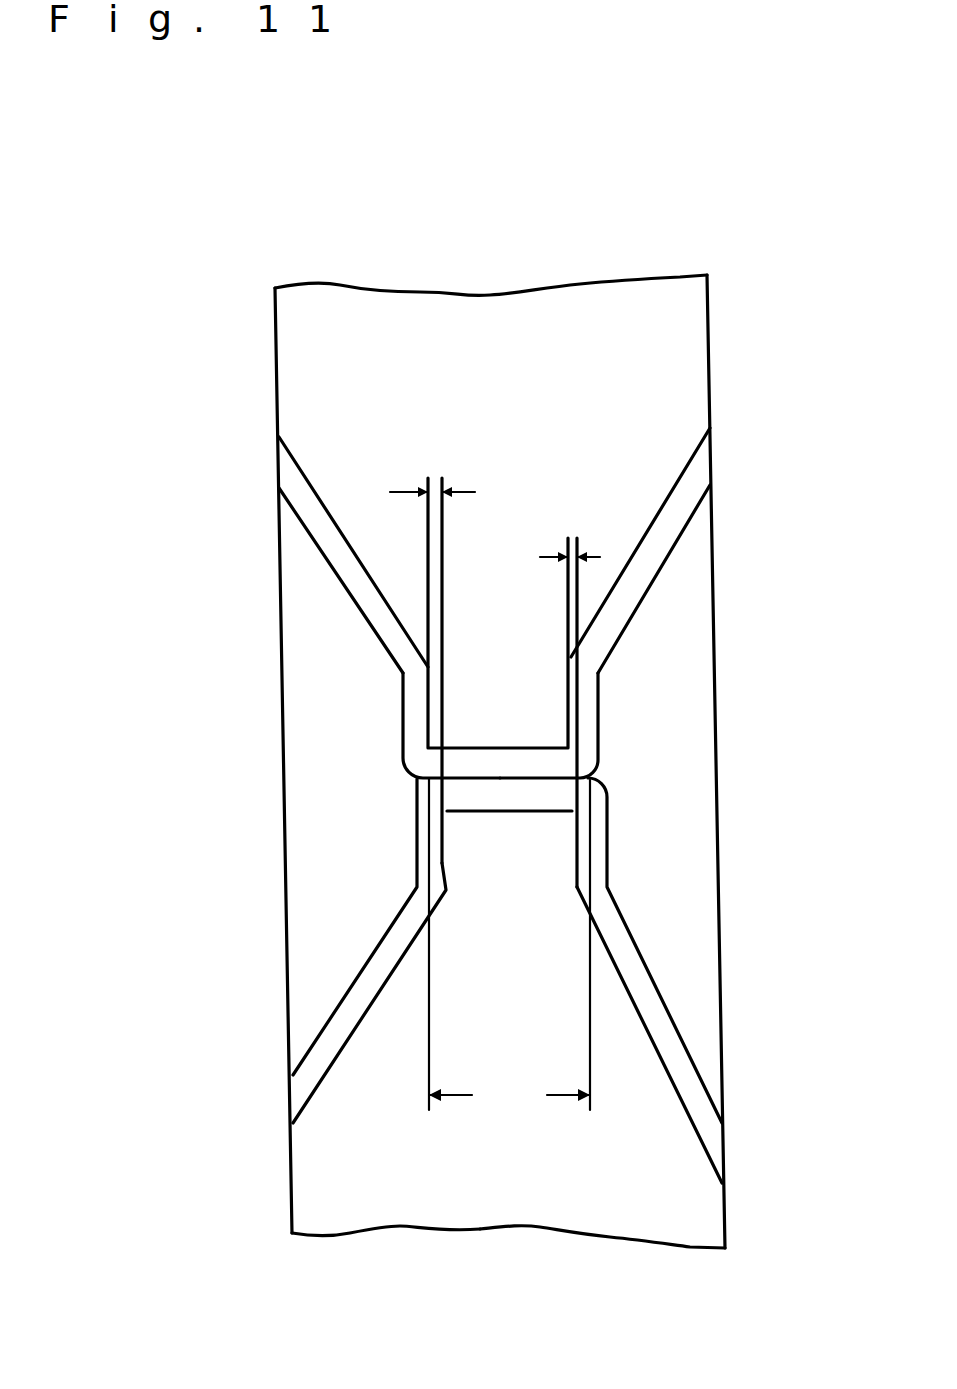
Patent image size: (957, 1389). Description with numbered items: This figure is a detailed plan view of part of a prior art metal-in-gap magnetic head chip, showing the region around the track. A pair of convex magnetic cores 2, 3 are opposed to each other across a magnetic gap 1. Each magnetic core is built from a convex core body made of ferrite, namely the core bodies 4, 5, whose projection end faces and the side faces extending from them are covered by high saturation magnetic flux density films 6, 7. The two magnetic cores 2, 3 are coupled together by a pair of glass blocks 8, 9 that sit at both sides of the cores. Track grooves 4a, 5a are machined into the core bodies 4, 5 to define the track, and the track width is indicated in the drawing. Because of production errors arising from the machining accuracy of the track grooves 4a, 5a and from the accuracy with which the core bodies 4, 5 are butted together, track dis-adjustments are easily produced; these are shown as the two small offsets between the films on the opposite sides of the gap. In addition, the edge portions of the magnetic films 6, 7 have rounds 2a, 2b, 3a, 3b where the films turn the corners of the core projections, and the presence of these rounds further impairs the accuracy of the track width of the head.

The magnetic gap 1 is at (529, 781).
The magnetic core 2 is at (553, 1230).
The round 2a is at (417, 788).
The round 2b is at (605, 793).
The magnetic core 3 is at (432, 290).
The round 3a is at (410, 773).
The round 3b is at (587, 775).
The core body 4 is at (413, 1193).
The track groove 4a is at (430, 873).
The core body 5 is at (690, 350).
The track groove 5a is at (402, 677).
The high saturation magnetic flux density film 6 is at (618, 932).
The high saturation magnetic flux density film 7 is at (413, 713).
The glass block 8 is at (308, 815).
The glass block 9 is at (697, 788).